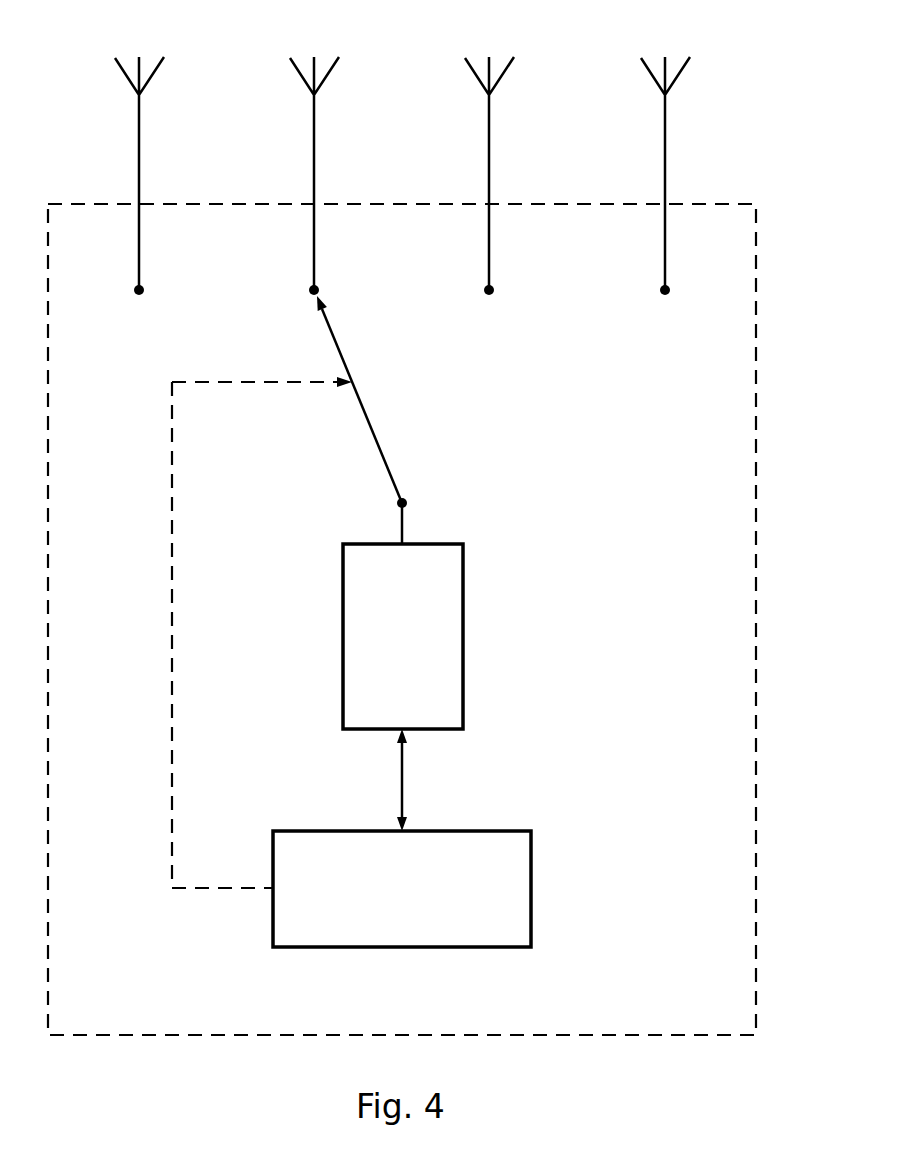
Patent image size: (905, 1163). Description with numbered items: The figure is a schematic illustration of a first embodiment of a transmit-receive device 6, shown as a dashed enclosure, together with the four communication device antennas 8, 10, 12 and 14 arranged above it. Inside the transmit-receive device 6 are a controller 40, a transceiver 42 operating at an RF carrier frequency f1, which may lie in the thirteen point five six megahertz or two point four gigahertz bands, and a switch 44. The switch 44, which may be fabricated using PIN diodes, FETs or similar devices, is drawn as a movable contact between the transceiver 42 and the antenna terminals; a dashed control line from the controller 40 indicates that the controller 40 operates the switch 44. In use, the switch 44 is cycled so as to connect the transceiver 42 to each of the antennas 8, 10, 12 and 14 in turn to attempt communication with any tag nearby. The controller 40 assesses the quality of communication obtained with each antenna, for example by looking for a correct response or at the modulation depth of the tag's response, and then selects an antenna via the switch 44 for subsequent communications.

The transmit-receive device 6 is at (757, 495).
The communication device antenna 8 is at (137, 66).
The communication device antenna 10 is at (312, 66).
The communication device antenna 12 is at (487, 66).
The communication device antenna 14 is at (663, 66).
The controller 40 is at (532, 888).
The transceiver 42 is at (463, 637).
The switch 44 is at (357, 393).